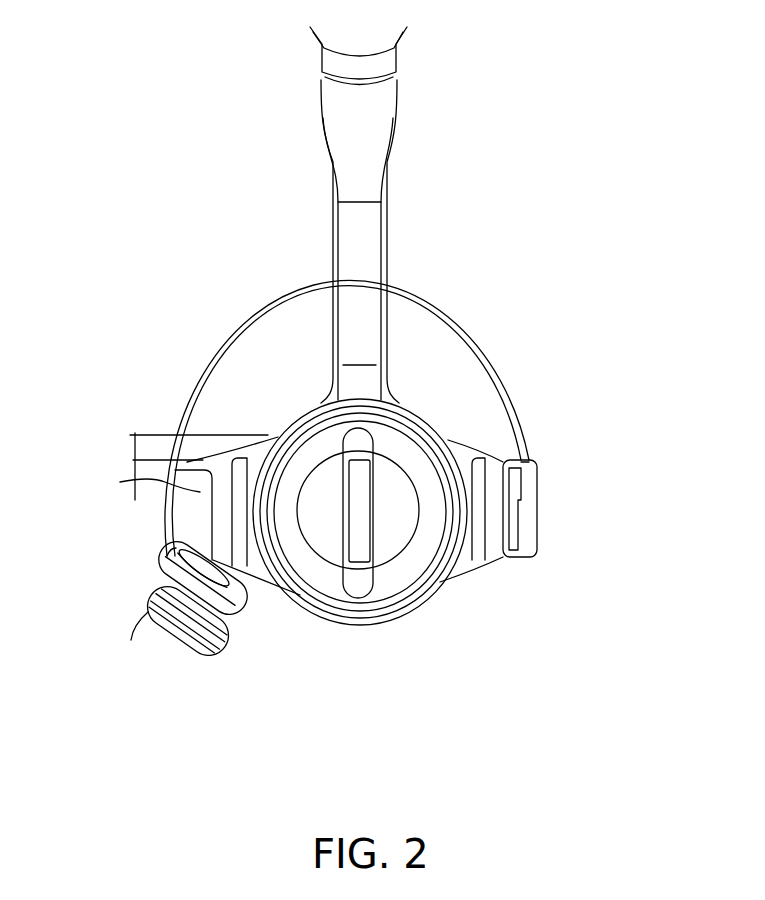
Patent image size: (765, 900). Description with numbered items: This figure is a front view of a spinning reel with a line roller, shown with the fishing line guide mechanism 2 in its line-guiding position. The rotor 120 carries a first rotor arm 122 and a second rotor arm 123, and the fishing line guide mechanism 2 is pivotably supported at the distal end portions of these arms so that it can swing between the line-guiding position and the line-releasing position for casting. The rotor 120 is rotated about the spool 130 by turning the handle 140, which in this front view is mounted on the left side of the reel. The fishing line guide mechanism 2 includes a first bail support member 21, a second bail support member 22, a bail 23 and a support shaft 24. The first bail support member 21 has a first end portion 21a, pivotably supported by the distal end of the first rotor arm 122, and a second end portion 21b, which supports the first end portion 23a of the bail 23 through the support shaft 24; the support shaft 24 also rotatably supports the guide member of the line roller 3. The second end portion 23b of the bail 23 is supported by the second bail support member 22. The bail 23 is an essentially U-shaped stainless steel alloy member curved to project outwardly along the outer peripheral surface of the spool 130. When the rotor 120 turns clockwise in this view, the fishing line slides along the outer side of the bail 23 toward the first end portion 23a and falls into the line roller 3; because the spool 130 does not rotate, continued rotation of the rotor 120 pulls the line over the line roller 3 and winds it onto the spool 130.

The fishing line guide mechanism 2 is at (348, 395).
The line roller 3 is at (145, 626).
The first bail support member 21 is at (174, 616).
The first end portion 21a is at (145, 480).
The second end portion 21b is at (157, 645).
The second bail support member 22 is at (522, 485).
The bail 23 is at (470, 305).
The first end portion 23a is at (166, 578).
The second end portion 23b is at (530, 442).
The support shaft 24 is at (168, 547).
The rotor 120 is at (494, 579).
The first rotor arm 122 is at (229, 455).
The second rotor arm 123 is at (490, 458).
The spool 130 is at (322, 598).
The handle 140 is at (165, 430).